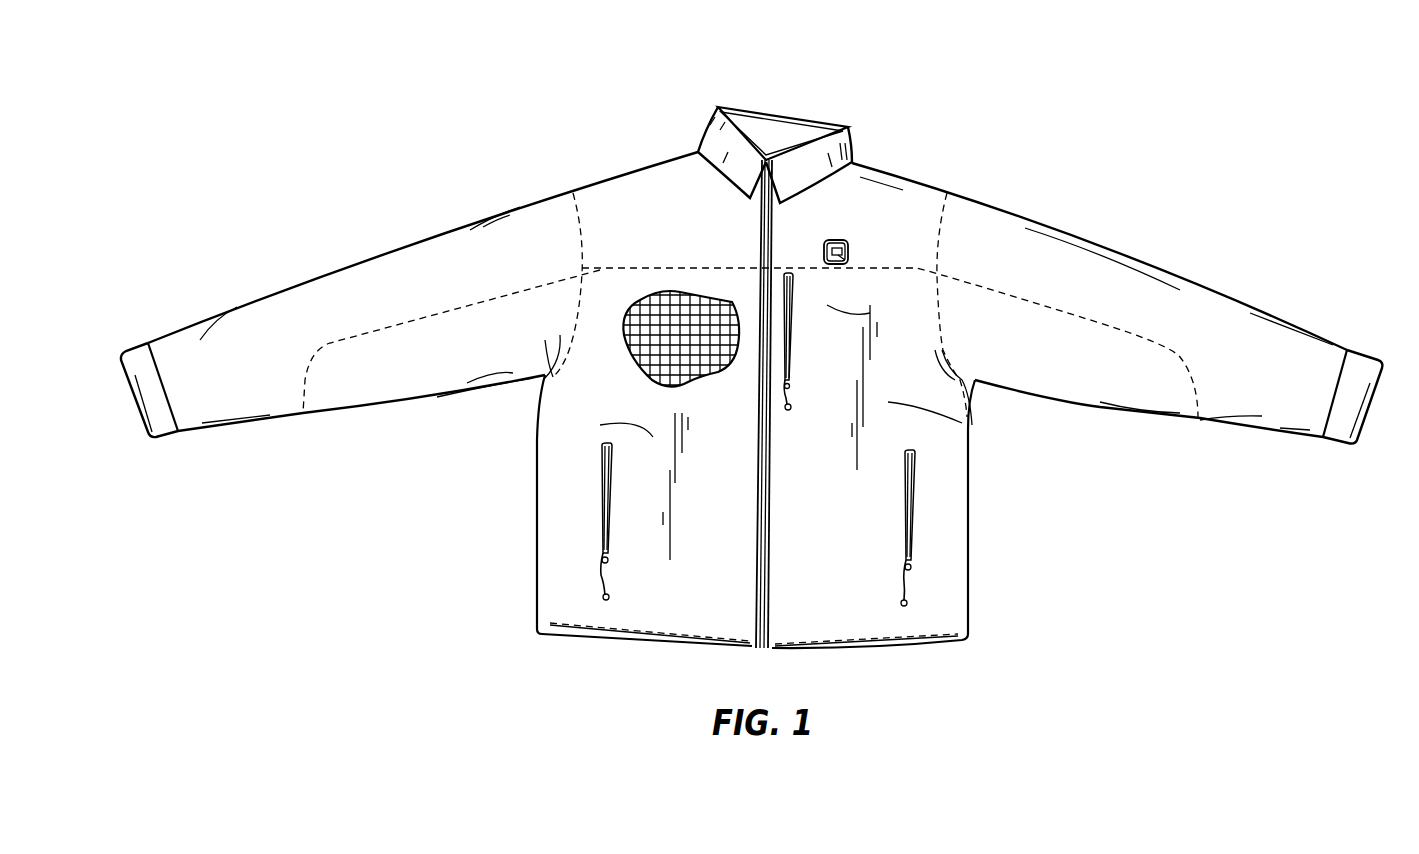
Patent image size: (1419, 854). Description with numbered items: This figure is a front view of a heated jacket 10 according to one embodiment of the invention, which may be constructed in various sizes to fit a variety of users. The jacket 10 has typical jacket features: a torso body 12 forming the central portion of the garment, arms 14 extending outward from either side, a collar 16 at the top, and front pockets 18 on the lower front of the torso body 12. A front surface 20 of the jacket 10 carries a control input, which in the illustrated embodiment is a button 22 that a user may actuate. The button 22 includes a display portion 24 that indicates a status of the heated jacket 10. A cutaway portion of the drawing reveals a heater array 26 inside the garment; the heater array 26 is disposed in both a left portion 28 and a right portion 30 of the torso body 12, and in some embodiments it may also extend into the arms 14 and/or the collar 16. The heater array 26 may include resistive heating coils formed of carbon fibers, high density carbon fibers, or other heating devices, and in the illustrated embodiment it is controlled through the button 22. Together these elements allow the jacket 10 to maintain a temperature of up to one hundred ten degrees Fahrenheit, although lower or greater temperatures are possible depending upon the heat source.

The heated jacket 10 is at (1037, 112).
The torso body 12 is at (660, 588).
The arms 14 is at (340, 273).
The collar 16 is at (857, 140).
The front pockets 18 is at (600, 520).
The front surface 20 is at (872, 310).
The button 22 is at (840, 240).
The display portion 24 is at (850, 257).
The heater array 26 is at (657, 350).
The left portion 28 is at (890, 403).
The right portion 30 is at (653, 437).